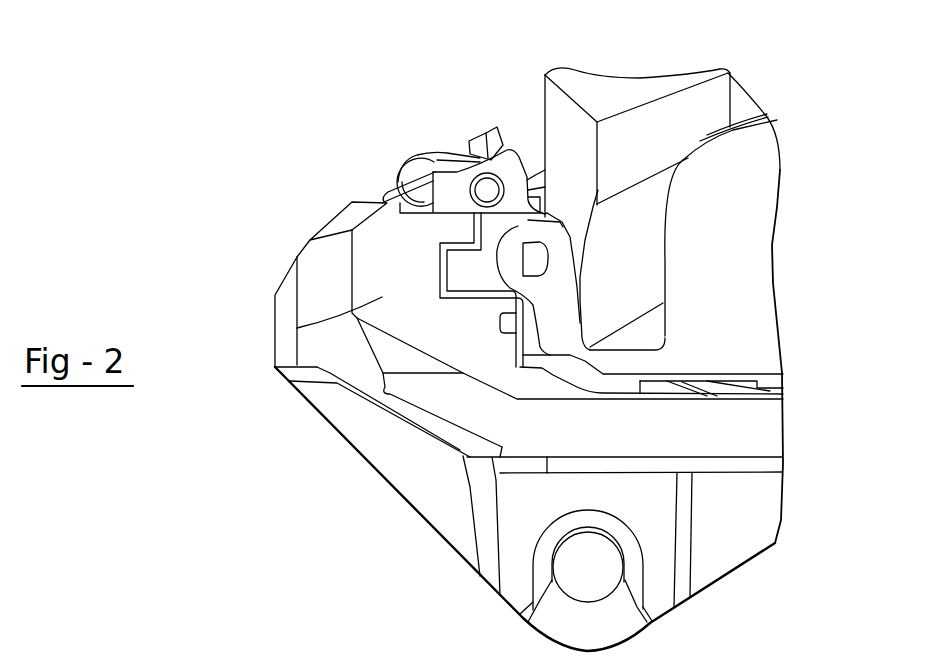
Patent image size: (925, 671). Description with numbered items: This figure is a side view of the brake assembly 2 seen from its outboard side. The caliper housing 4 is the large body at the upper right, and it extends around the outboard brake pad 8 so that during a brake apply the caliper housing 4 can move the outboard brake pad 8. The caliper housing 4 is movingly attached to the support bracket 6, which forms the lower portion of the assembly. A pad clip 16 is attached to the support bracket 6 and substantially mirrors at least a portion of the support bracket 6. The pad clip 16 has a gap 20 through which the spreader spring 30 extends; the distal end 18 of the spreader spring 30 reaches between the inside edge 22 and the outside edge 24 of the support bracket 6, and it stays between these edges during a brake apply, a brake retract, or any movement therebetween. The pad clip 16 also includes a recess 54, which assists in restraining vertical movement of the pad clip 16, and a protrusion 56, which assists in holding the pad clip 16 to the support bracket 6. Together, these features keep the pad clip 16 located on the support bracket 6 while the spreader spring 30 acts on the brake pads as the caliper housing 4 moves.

The brake assembly 2 is at (242, 139).
The caliper housing 4 is at (667, 127).
The support bracket 6 is at (297, 328).
The outboard brake pad 8 is at (742, 285).
The pad clip 16 is at (398, 170).
The distal end 18 is at (390, 210).
The gap 20 is at (335, 126).
The inside edge 22 is at (387, 200).
The outside edge 24 is at (387, 203).
The spreader spring 30 is at (417, 155).
The recess 54 is at (433, 160).
The protrusion 56 is at (507, 227).